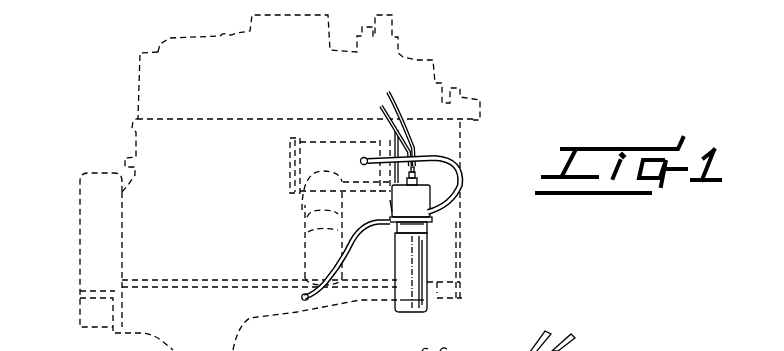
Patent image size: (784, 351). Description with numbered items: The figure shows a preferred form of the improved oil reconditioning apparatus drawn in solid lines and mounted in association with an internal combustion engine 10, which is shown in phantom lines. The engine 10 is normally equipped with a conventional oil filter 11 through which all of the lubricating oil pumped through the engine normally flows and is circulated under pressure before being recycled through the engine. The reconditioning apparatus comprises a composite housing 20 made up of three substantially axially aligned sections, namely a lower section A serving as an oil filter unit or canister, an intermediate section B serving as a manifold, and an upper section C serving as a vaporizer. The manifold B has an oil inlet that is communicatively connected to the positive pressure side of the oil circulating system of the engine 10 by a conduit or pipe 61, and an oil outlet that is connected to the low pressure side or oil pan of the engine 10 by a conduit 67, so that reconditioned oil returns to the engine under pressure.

The internal combustion engine 10 is at (158, 52).
The oil filter 11 is at (303, 219).
The composite housing 20 is at (440, 177).
The conduit or pipe 61 is at (461, 187).
The conduit 67 is at (323, 295).
The lower section A is at (407, 306).
The intermediate section B is at (408, 228).
The upper section C is at (390, 206).